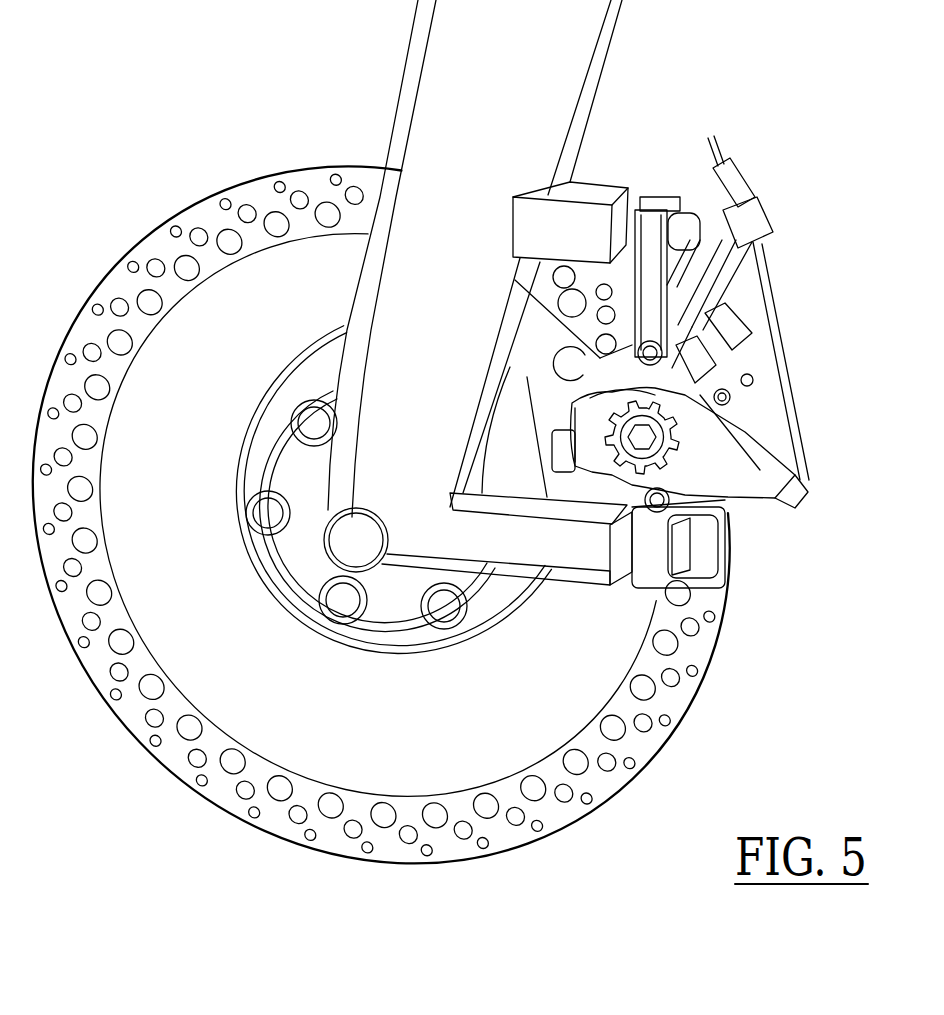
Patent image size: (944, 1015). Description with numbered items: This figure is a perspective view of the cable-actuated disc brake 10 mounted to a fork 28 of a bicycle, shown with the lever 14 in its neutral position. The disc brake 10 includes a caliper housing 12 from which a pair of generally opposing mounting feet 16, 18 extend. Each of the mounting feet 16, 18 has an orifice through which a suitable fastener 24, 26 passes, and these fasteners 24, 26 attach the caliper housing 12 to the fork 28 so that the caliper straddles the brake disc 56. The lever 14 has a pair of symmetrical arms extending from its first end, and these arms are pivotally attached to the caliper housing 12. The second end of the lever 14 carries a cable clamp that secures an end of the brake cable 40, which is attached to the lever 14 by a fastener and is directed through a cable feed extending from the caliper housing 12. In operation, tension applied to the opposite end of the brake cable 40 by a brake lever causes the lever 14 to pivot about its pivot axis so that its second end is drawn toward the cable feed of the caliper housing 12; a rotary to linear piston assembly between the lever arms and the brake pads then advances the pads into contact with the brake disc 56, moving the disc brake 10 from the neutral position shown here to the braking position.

The disc brake 10 is at (675, 340).
The caliper housing 12 is at (727, 497).
The lever 14 is at (770, 477).
The mounting foot 16 is at (650, 567).
The mounting foot 18 is at (655, 197).
The fastener 24 is at (683, 552).
The fastener 26 is at (692, 197).
The fork 28 is at (492, 140).
The brake cable 40 is at (716, 137).
The brake disc 56 is at (687, 662).